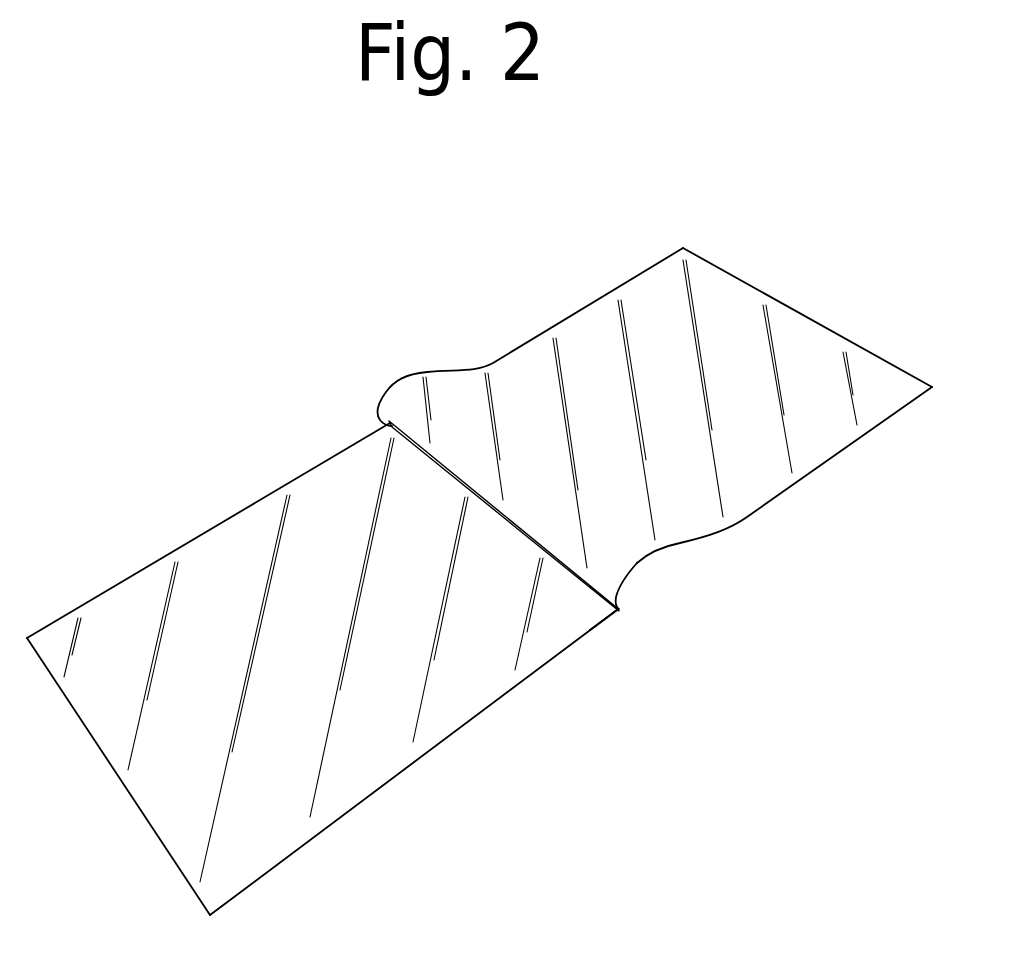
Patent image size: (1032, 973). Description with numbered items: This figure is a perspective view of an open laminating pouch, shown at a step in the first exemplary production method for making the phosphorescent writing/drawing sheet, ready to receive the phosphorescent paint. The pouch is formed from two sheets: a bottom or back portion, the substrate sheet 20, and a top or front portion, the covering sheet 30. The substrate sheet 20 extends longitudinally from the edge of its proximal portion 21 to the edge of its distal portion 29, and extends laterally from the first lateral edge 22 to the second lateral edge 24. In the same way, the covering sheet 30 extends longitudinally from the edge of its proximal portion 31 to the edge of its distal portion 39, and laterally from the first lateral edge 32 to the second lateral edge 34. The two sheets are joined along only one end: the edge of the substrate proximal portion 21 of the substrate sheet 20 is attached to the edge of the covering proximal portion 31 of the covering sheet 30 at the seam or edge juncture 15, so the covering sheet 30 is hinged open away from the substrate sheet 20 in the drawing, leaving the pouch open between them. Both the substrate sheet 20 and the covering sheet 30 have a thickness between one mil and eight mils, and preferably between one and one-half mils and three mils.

The seam or edge juncture 15 is at (624, 608).
The substrate sheet 20 is at (359, 653).
The proximal portion of the substrate sheet 21 is at (620, 619).
The first lateral edge of the substrate sheet 22 is at (438, 748).
The second lateral edge of the substrate sheet 24 is at (293, 480).
The distal portion of the substrate sheet 29 is at (163, 843).
The covering sheet 30 is at (655, 404).
The proximal portion of the covering sheet 31 is at (627, 578).
The first lateral edge of the covering sheet 32 is at (797, 483).
The second lateral edge of the covering sheet 34 is at (582, 307).
The distal portion of the covering sheet 39 is at (823, 326).